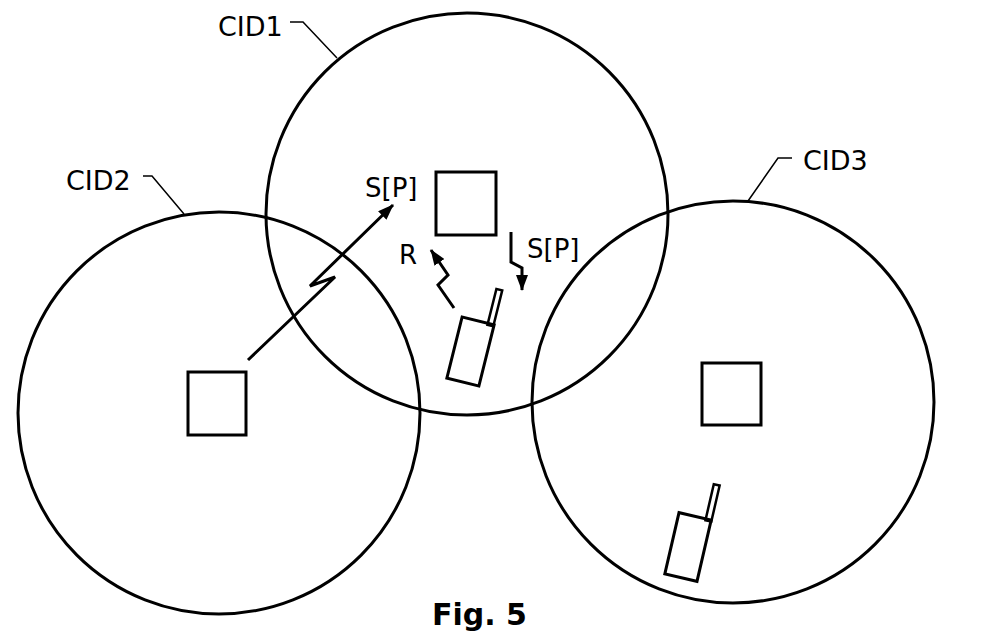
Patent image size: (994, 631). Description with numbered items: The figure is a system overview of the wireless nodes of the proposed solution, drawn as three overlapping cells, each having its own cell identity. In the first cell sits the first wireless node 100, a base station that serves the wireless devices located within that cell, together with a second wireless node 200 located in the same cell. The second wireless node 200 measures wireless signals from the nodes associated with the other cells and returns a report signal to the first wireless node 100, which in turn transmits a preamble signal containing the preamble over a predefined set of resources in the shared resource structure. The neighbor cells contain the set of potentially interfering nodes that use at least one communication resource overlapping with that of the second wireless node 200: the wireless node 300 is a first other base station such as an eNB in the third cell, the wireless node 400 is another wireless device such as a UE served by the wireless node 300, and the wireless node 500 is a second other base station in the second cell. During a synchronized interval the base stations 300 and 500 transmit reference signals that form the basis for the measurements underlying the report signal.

The first wireless node 100 is at (440, 170).
The second wireless node 200 is at (496, 407).
The wireless node 300 is at (778, 381).
The wireless node 400 is at (658, 520).
The wireless node 500 is at (166, 402).